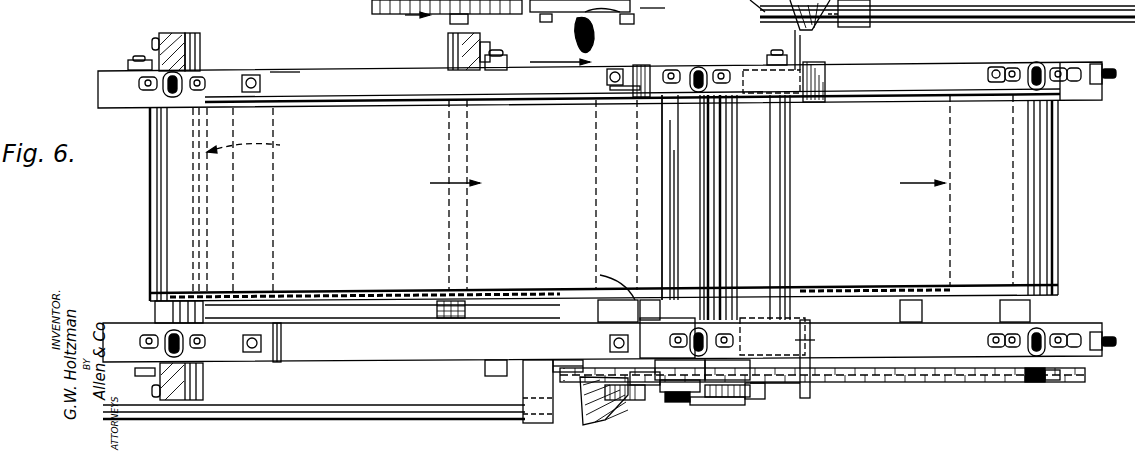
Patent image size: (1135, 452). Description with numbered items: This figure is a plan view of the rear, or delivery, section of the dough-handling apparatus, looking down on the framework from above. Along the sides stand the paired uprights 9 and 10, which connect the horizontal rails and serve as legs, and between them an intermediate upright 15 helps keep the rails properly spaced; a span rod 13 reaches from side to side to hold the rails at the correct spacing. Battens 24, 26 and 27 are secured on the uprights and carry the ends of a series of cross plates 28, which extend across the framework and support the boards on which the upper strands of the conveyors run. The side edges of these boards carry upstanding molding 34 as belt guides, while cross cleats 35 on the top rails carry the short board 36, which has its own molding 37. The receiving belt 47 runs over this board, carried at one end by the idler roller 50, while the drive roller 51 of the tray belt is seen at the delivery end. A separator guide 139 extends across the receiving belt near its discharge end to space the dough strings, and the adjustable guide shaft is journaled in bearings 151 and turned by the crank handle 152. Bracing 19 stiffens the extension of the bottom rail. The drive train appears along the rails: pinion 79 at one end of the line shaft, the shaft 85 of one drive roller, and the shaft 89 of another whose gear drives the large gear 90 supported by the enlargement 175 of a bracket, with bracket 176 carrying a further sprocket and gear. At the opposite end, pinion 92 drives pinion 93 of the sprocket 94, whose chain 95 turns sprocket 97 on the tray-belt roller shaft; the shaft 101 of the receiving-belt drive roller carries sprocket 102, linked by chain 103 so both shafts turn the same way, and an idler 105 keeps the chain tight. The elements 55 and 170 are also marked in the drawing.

The upright 9 is at (154, 42).
The upright 10 is at (800, 62).
The span rod 13 is at (790, 218).
The intermediate upright 15 is at (494, 60).
The bracing 19 is at (560, 50).
The batten 24 is at (982, 8).
The batten 26 is at (173, 33).
The batten 27 is at (448, 59).
The cross plate 28 is at (197, 33).
The upstanding molding 34 is at (600, 76).
The cross cleat 35 is at (262, 78).
The board 36 is at (255, 145).
The upstanding molding 37 is at (292, 100).
The receiving belt 47 is at (215, 120).
The idler roller 50 is at (155, 313).
The drive roller 51 is at (1045, 325).
The clamp bolt 55 is at (140, 341).
The pinion 79 is at (728, 300).
The shaft 85 is at (750, 4).
The shaft 89 is at (516, 8).
The large gear 90 is at (372, 5).
The pinion 92 is at (592, 420).
The pinion 93 is at (635, 400).
The sprocket 94 is at (576, 362).
The chain 95 is at (968, 372).
The sprocket 97 is at (1050, 380).
The shaft 101 is at (728, 400).
The sprocket 102 is at (740, 407).
The chain 103 is at (740, 418).
The idler 105 is at (690, 402).
The guide 139 is at (662, 163).
The bearing 151 is at (630, 14).
The crank handle 152 is at (598, 44).
The direction arrow 170 is at (425, 21).
The enlargement 175 is at (630, 92).
The bracket 176 is at (665, 8).